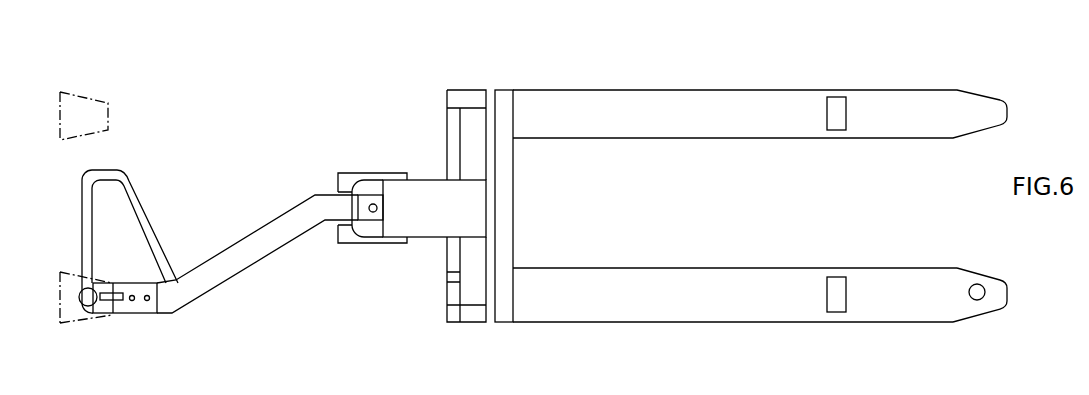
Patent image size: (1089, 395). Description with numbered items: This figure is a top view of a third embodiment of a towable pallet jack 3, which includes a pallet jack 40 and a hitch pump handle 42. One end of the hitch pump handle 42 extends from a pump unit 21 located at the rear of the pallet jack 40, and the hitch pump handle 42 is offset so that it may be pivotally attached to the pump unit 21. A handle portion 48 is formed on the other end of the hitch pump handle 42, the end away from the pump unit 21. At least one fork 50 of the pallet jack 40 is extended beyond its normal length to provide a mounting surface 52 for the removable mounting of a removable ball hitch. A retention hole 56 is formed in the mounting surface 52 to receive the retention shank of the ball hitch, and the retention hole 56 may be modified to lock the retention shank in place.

The towable pallet jack 3 is at (983, 63).
The pump unit 21 is at (425, 195).
The pallet jack 40 is at (639, 78).
The hitch pump handle 42 is at (210, 273).
The handle portion 48 is at (132, 188).
The fork 50 is at (720, 312).
The mounting surface 52 is at (972, 280).
The retention hole 56 is at (980, 298).